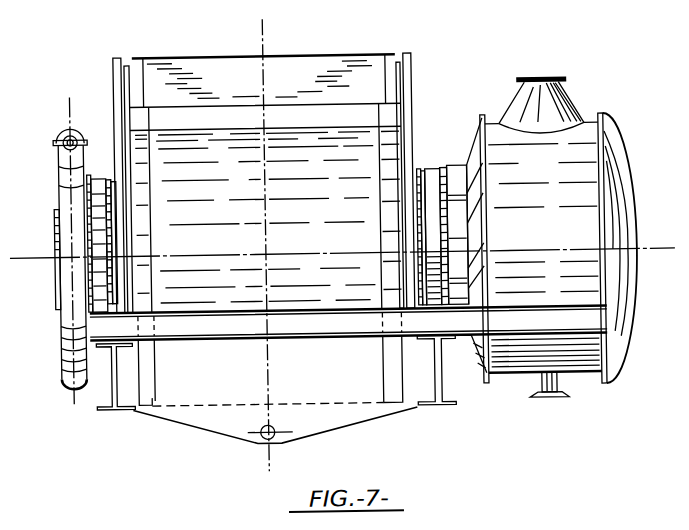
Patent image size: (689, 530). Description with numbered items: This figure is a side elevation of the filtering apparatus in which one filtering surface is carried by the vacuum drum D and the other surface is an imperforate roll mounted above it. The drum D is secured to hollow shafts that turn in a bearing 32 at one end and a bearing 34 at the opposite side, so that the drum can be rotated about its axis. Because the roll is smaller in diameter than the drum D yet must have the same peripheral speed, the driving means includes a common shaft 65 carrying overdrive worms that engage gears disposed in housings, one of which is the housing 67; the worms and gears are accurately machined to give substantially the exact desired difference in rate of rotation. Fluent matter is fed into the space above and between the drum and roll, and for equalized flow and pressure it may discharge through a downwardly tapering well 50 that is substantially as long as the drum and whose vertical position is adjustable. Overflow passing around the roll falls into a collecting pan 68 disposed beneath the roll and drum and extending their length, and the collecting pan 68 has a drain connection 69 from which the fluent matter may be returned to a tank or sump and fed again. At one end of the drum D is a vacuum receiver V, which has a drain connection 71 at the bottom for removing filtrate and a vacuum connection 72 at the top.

The downwardly tapering well 50 is at (355, 73).
The common shaft 65 is at (67, 132).
The housing 67 is at (86, 181).
The bearing 32 is at (100, 216).
The bearing 34 is at (433, 173).
The vacuum connection 72 is at (549, 80).
The vacuum receiver V is at (604, 166).
The drain connection 71 is at (560, 392).
The collecting pan 68 is at (356, 415).
The drain connection 69 is at (254, 437).
The vacuum drum D is at (188, 403).